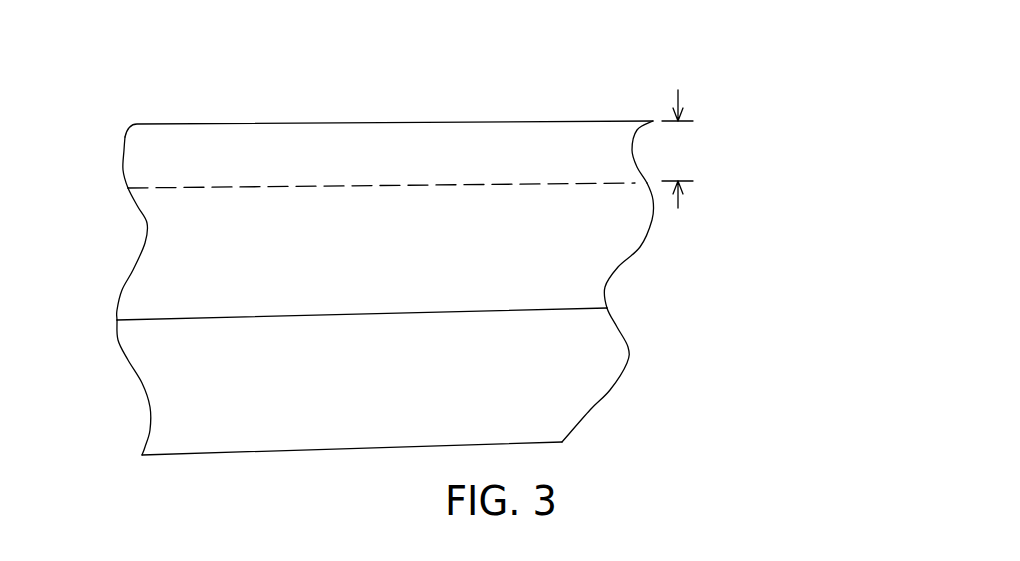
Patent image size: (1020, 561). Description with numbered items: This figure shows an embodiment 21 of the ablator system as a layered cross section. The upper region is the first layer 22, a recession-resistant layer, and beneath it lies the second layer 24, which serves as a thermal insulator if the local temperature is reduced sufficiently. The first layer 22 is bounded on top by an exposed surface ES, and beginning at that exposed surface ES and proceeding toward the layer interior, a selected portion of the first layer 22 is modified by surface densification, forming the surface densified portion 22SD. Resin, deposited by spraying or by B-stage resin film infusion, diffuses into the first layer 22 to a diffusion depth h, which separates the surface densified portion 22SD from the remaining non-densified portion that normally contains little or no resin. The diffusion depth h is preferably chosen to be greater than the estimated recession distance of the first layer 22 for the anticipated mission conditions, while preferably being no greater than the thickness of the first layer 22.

The ablator system embodiment 21 is at (568, 69).
The first layer 22 is at (702, 121).
The surface densified portion 22SD is at (152, 153).
The exposed surface ES is at (172, 124).
The diffusion depth h is at (677, 149).
The second layer 24 is at (702, 309).